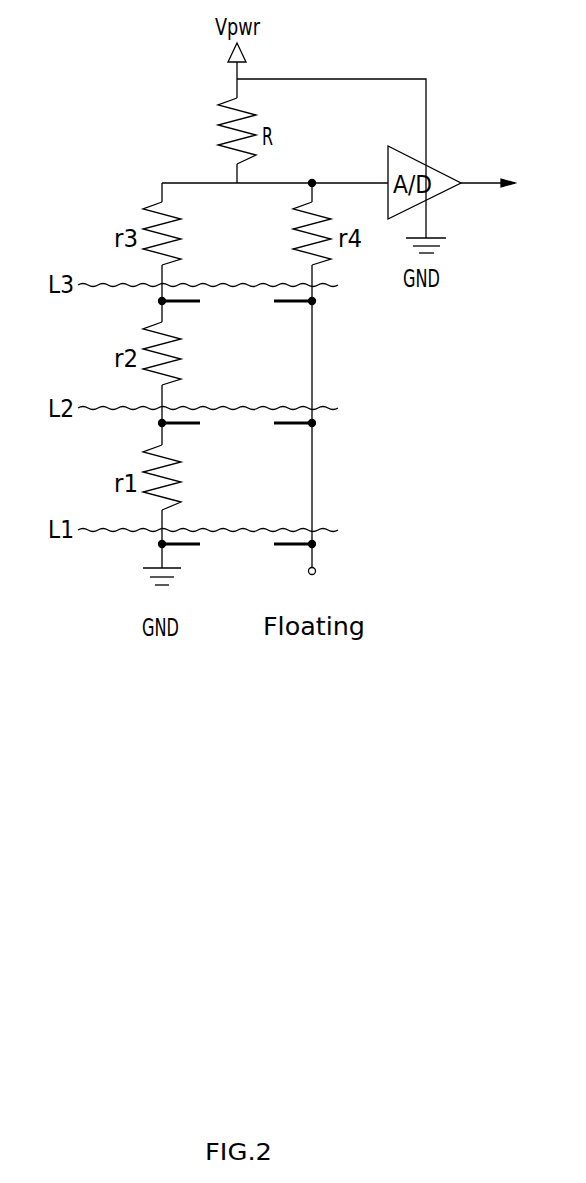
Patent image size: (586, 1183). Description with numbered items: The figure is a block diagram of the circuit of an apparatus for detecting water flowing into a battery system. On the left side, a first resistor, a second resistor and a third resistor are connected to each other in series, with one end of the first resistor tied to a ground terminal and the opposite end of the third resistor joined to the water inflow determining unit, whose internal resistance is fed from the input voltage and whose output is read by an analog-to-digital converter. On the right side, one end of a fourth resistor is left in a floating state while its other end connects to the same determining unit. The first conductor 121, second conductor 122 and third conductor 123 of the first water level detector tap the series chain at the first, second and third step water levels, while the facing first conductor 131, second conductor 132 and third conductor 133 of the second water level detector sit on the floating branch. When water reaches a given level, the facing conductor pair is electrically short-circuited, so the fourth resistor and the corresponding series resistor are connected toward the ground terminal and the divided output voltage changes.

The conductor 1-1 121 is at (198, 547).
The conductor 1-2 122 is at (198, 426).
The conductor 1-3 123 is at (198, 304).
The conductor 2-1 131 is at (294, 547).
The conductor 2-2 132 is at (294, 426).
The conductor 2-3 133 is at (294, 304).